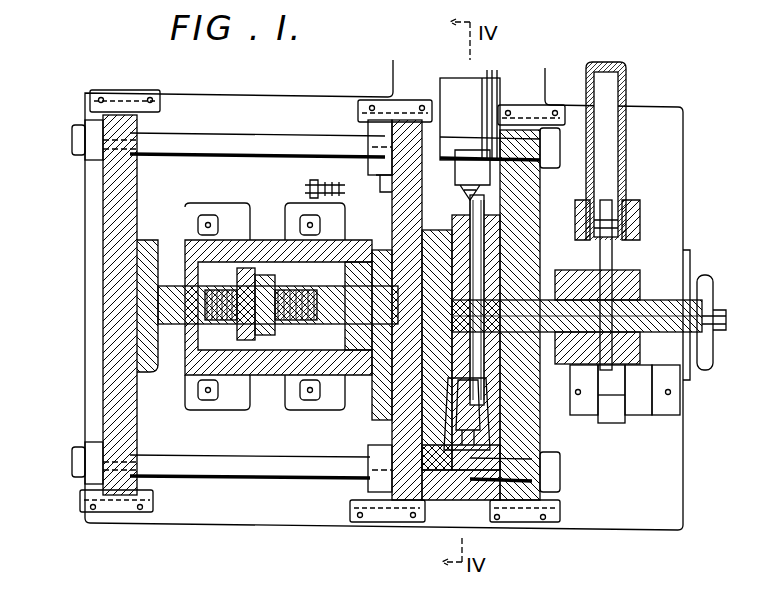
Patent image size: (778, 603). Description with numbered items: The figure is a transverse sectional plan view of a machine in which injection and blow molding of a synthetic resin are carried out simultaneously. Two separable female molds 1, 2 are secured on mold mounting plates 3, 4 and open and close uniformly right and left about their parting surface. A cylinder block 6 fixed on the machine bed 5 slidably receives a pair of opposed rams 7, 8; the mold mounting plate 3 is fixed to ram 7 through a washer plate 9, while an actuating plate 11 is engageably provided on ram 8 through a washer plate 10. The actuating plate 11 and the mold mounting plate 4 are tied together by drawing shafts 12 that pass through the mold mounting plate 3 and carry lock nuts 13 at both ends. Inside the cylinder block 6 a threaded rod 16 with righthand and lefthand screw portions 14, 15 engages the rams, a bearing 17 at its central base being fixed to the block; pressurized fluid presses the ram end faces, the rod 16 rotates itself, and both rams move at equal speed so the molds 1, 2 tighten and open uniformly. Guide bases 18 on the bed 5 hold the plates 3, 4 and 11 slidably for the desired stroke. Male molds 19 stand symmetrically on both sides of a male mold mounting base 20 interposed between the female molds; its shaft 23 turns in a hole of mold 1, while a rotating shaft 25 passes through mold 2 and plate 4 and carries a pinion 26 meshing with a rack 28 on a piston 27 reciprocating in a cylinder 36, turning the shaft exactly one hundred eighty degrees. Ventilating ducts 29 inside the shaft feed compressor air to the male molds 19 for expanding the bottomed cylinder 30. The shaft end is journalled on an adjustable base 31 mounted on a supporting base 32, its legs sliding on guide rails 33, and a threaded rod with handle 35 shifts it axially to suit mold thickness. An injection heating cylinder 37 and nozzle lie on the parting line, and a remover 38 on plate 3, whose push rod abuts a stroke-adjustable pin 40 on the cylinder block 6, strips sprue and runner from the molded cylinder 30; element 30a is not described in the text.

The separable female mold 1 is at (442, 455).
The separable female mold 2 is at (470, 455).
The mold mounting plate 3 is at (405, 498).
The mold mounting plate 4 is at (515, 498).
The machine bed 5 is at (300, 100).
The cylinder block 6 is at (222, 400).
The ram 7 is at (362, 300).
The ram 8 is at (173, 322).
The washer plate 9 is at (382, 360).
The washer plate 10 is at (150, 240).
The actuating plate 11 is at (110, 288).
The drawing shafts 12 is at (220, 145).
The lock nuts 13 is at (80, 150).
The righthand screw portion 14 is at (240, 245).
The lefthand screw portion 15 is at (268, 255).
The threaded rod 16 is at (290, 388).
The bearing 17 is at (245, 388).
The guide bases 18 is at (130, 100).
The male molds 19 is at (518, 212).
The male mold mounting base 20 is at (505, 272).
The shaft 23 is at (425, 262).
The rotating shaft 25 is at (545, 335).
The pinion 26 is at (628, 284).
The piston 27 is at (612, 198).
The rack 28 is at (598, 420).
The ventilating ducts 29 is at (625, 352).
The bottomed cylinder 30 is at (425, 214).
The rod end 30a is at (518, 428).
The adjustable base 31 is at (612, 420).
The supporting base 32 is at (655, 418).
The guide rails 33 is at (632, 420).
The threaded rod with handle 35 is at (706, 290).
The cylinder 36 is at (626, 66).
The injection heating cylinder 37 is at (450, 100).
The remover 38 is at (385, 190).
The pin 40 is at (320, 184).